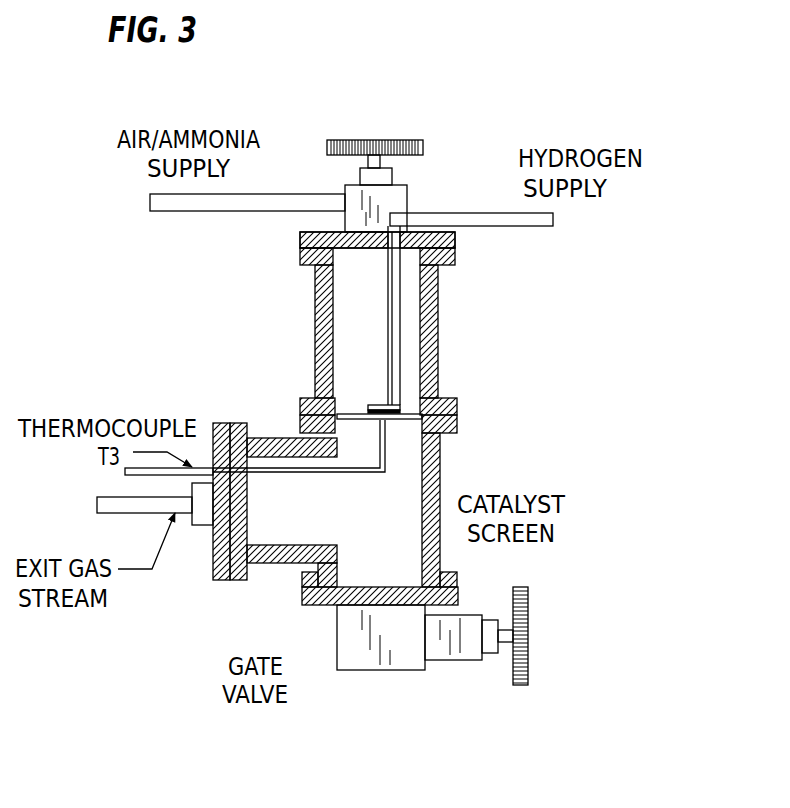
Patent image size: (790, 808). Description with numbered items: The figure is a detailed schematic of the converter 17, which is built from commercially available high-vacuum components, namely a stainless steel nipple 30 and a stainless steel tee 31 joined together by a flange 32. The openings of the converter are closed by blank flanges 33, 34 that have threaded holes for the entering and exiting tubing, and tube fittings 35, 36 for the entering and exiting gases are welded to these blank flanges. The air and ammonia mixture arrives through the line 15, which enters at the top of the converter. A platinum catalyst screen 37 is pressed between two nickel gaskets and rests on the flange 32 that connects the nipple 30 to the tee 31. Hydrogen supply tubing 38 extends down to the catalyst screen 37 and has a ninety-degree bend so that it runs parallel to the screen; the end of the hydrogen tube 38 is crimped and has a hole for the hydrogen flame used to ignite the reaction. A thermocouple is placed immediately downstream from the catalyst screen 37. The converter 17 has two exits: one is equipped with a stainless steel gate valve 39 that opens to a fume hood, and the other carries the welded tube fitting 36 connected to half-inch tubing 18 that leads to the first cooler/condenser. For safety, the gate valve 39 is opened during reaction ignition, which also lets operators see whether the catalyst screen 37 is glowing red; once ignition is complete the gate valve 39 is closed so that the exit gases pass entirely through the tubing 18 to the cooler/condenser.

The line 15 is at (288, 193).
The converter 17 is at (440, 350).
The tubing 18 is at (125, 517).
The stainless steel nipple 30 is at (315, 322).
The stainless steel tee 31 is at (266, 426).
The flange 32 is at (443, 395).
The blank flange 33 is at (455, 240).
The blank flange 34 is at (226, 422).
The tube fitting 35 is at (403, 183).
The tube fitting 36 is at (204, 518).
The platinum catalyst screen 37 is at (413, 420).
The hydrogen supply tubing 38 is at (472, 210).
The gate valve 39 is at (333, 653).